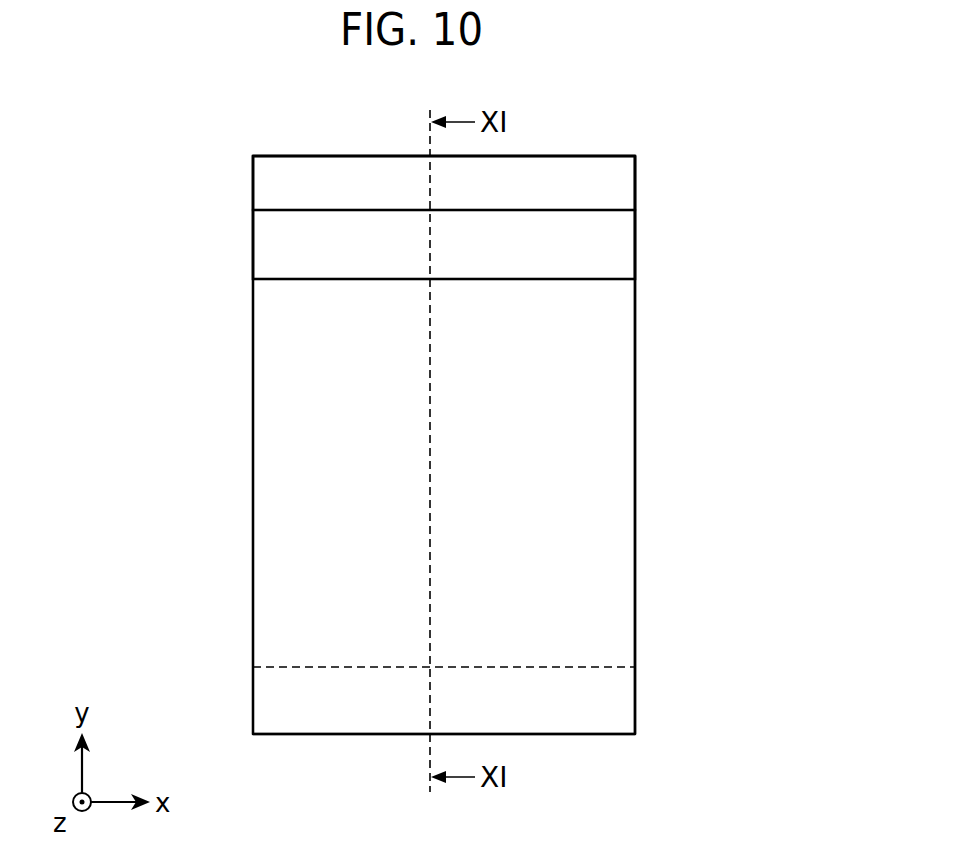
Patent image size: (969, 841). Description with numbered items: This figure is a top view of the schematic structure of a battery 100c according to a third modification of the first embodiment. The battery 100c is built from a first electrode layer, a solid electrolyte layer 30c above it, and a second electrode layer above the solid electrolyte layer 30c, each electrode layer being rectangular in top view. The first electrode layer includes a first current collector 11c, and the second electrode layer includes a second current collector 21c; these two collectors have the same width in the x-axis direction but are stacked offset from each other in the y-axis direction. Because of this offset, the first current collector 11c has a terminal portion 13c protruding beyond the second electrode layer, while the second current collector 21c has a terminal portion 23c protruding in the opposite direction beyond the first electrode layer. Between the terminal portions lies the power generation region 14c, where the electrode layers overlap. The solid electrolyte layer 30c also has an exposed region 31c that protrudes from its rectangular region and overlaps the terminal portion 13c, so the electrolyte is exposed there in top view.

The battery 100c is at (168, 172).
The first current collector 11c is at (380, 155).
The solid electrolyte layer 30c is at (270, 209).
The exposed region 31c is at (277, 250).
The terminal portion 13c is at (650, 156).
The power generation region 14c is at (620, 475).
The second current collector 21c is at (253, 598).
The terminal portion 23c is at (650, 667).